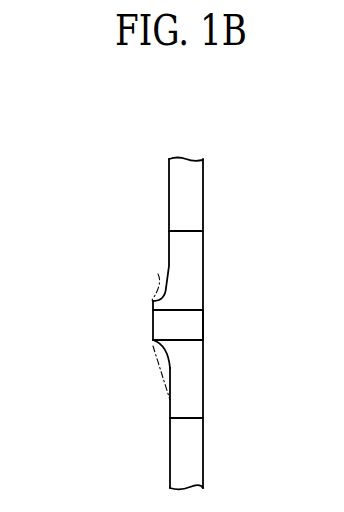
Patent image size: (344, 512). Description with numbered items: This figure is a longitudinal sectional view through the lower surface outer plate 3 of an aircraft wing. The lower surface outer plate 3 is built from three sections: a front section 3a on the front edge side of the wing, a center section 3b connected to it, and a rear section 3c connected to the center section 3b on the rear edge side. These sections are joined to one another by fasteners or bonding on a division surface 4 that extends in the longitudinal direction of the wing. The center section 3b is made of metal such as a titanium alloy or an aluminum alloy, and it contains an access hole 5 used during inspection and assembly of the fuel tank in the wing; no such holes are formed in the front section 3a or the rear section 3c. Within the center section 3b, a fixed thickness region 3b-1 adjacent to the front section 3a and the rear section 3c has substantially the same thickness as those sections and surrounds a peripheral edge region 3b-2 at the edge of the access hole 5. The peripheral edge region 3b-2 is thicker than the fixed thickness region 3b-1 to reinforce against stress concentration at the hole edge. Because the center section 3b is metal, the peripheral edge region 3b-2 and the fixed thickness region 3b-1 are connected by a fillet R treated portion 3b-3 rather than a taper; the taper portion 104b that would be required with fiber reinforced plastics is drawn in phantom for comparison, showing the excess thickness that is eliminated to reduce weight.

The lower surface outer plate 3 is at (131, 211).
The front section 3a is at (193, 200).
The center section 3b is at (193, 295).
The fixed thickness region 3b-1 is at (193, 257).
The peripheral edge region 3b-2 is at (152, 344).
The fillet R treated portion 3b-3 is at (164, 352).
The rear section 3c is at (195, 457).
The division surface 4 is at (203, 231).
The access hole 5 is at (195, 327).
The taper portion 104b is at (158, 274).